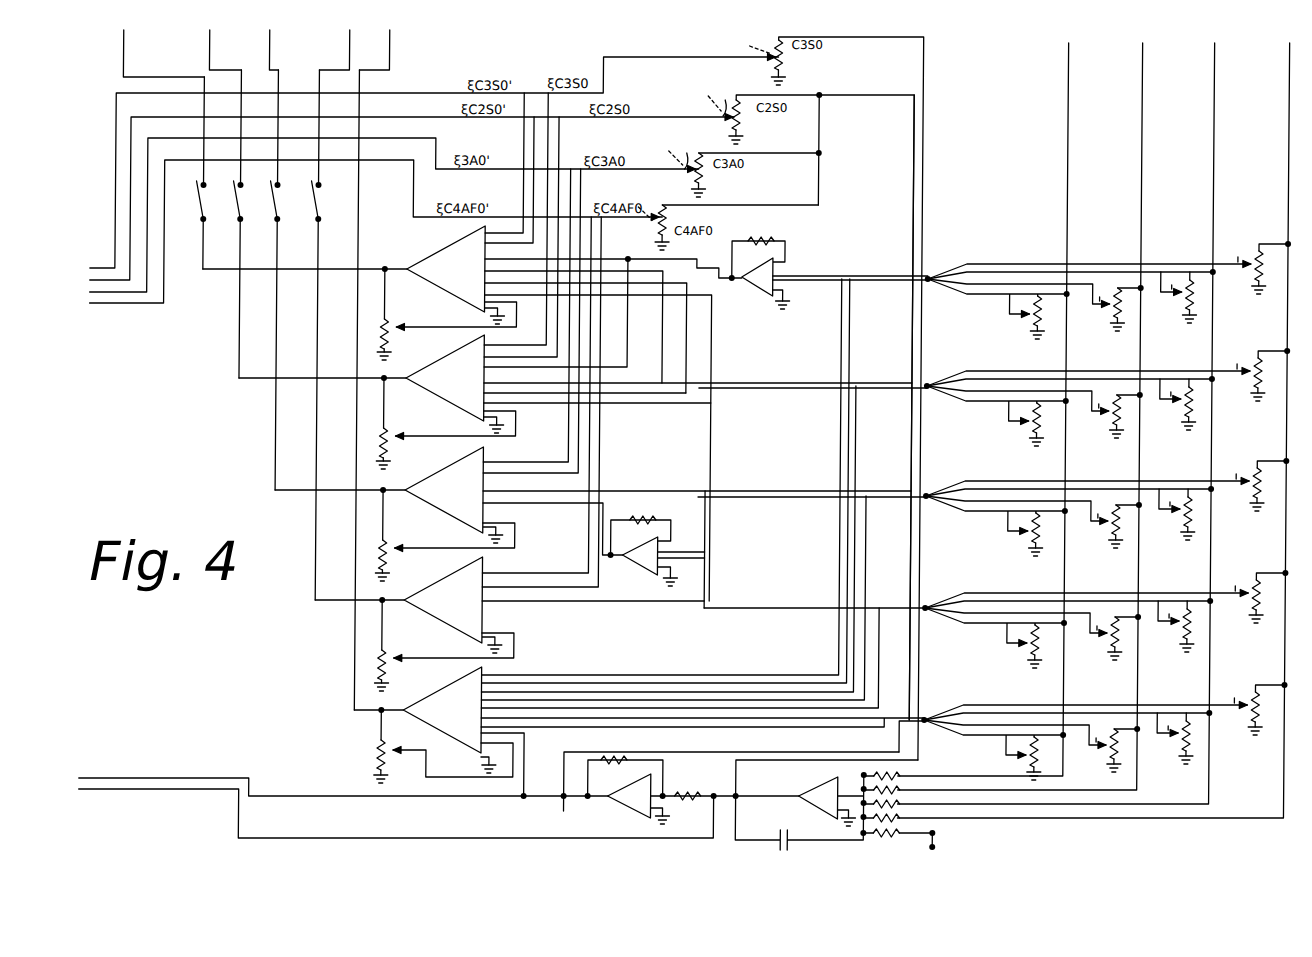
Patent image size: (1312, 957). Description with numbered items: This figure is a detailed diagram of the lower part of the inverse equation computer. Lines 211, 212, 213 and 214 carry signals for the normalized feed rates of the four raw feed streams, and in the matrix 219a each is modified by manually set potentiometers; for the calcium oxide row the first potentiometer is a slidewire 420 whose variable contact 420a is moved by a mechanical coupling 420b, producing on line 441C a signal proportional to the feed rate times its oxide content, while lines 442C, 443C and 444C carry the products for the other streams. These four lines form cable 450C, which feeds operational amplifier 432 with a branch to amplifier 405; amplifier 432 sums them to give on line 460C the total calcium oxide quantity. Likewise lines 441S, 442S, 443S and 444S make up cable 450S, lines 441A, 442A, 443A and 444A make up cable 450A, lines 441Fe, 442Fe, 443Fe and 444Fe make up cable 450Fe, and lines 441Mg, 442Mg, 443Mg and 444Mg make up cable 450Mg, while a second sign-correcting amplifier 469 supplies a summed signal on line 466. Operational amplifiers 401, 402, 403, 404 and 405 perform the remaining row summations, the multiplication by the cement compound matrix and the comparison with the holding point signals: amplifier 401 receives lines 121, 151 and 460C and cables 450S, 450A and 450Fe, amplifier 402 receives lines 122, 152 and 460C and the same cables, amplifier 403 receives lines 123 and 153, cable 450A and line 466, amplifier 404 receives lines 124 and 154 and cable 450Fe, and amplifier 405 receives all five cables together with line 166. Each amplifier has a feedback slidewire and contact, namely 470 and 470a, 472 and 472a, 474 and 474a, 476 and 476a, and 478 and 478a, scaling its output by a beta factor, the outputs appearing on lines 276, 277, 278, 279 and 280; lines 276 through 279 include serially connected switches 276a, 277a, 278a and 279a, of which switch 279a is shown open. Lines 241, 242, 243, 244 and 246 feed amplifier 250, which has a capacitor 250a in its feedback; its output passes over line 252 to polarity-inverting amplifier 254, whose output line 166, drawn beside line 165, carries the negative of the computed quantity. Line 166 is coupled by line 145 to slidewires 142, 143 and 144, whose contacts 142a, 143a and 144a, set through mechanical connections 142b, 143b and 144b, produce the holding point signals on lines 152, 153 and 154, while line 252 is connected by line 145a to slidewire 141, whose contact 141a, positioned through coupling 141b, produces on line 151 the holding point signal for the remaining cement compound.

The output line 276 is at (122, 44).
The output line 277 is at (216, 48).
The output line 278 is at (276, 48).
The output line 279 is at (356, 48).
The output line 280 is at (388, 50).
The switch 276a is at (184, 173).
The switch 277a is at (223, 224).
The switch 278a is at (259, 280).
The switch 279a is at (331, 335).
The line 121 is at (103, 268).
The line 122 is at (128, 275).
The line 123 is at (128, 292).
The line 124 is at (128, 304).
The line 151 is at (602, 68).
The line 152 is at (590, 111).
The line 153 is at (595, 176).
The line 154 is at (603, 227).
The potentiometer slidewire 141 is at (780, 61).
The movable contact 141a is at (768, 57).
The mechanical coupling 141b is at (743, 43).
The potentiometer slidewire 142 is at (745, 122).
The movable contact 142a is at (717, 97).
The mechanical connection 142b is at (693, 101).
The potentiometer slidewire 143 is at (708, 177).
The movable contact 143a is at (677, 149).
The mechanical connection 143b is at (655, 153).
The potentiometer slidewire 144 is at (666, 210).
The movable contact 144a is at (653, 230).
The mechanical connection 144b is at (660, 199).
The operational amplifier 401 is at (446, 279).
The operational amplifier 402 is at (446, 388).
The operational amplifier 403 is at (446, 500).
The operational amplifier 404 is at (446, 610).
The operational amplifier 405 is at (450, 721).
The potentiometer slidewire 470 is at (385, 319).
The contact 470a is at (402, 325).
The potentiometer slidewire 472 is at (385, 428).
The variable contact 472a is at (402, 434).
The potentiometer slidewire 474 is at (385, 540).
The variable contact 474a is at (402, 546).
The potentiometer slidewire 476 is at (385, 650).
The contact 476a is at (402, 656).
The feedback potentiometer slidewire 478 is at (381, 748).
The contact 478a is at (400, 754).
The operational amplifier 432 is at (761, 273).
The line 460C is at (722, 282).
The line 466 is at (532, 512).
The amplifier 469 is at (656, 551).
The cable 450C is at (873, 279).
The cable 450S is at (813, 399).
The cable 450A is at (768, 500).
The cable 450Fe is at (760, 613).
The cable 450Mg is at (820, 733).
The line 443C is at (940, 274).
The line 444C is at (1000, 265).
The line 441C is at (963, 290).
The line 442C is at (973, 304).
The line 443S is at (1070, 390).
The line 444S is at (1109, 375).
The line 441S is at (1034, 417).
The line 442S is at (997, 419).
The line 443A is at (1069, 500).
The line 444A is at (1108, 485).
The line 441A is at (1034, 527).
The line 442A is at (996, 529).
The line 443Fe is at (1068, 612).
The line 444Fe is at (1107, 597).
The line 441Fe is at (1032, 639).
The line 442Fe is at (996, 641).
The line 443Mg is at (1067, 724).
The line 444Mg is at (1106, 720).
The line 441Mg is at (1031, 751).
The line 442Mg is at (995, 753).
The slidewire 420 is at (1040, 324).
The variable contact 420a is at (1030, 319).
The mechanical coupling 420b is at (1030, 307).
The line 211 is at (1067, 66).
The line 212 is at (1141, 89).
The line 213 is at (1213, 89).
The line 214 is at (1288, 109).
The matrix 219a is at (1053, 233).
The line 241 is at (1067, 776).
The line 242 is at (1141, 790).
The line 243 is at (1213, 804).
The line 244 is at (1288, 818).
The line 246 is at (946, 836).
The line 145 is at (748, 739).
The line 145a is at (762, 763).
The line 252 is at (718, 796).
The amplifier 254 is at (652, 782).
The amplifier 250 is at (860, 800).
The capacitor 250a is at (784, 841).
The line 166 is at (105, 778).
The input line 165 is at (148, 795).